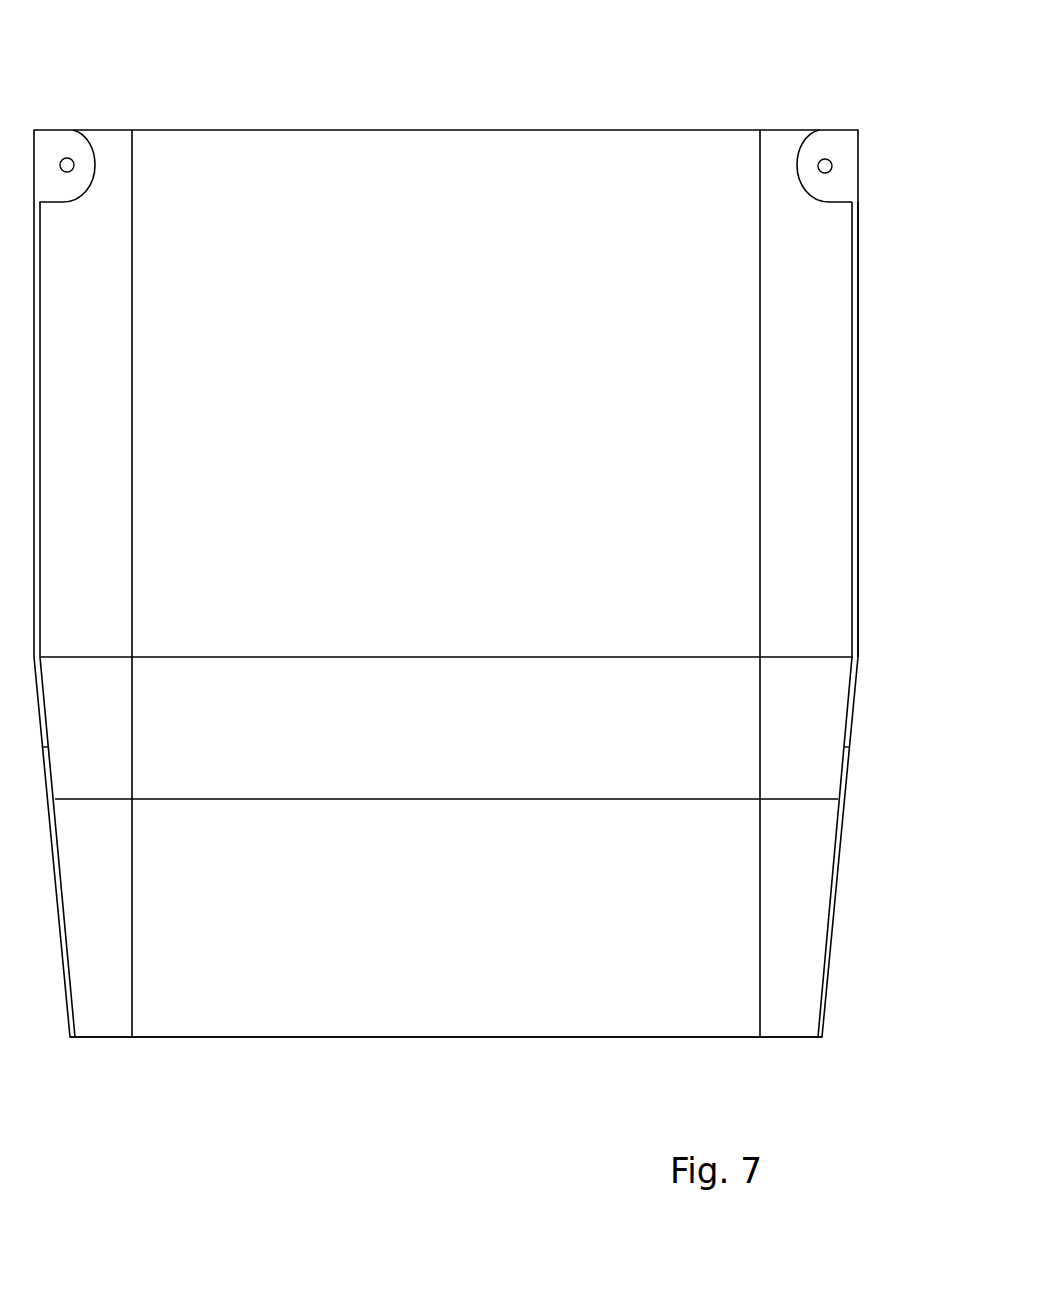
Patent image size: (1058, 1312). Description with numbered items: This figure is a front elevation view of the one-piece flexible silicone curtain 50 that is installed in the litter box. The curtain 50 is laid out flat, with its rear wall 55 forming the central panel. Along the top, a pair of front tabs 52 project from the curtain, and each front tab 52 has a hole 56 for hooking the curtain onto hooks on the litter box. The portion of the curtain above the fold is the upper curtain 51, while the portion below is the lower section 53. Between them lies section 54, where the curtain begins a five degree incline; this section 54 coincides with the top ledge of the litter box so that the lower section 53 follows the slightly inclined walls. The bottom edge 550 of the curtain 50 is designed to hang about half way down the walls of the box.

The curtain 50 is at (420, 86).
The upper curtain 51 is at (856, 548).
The front tabs 52 is at (833, 187).
The lower section 53 is at (843, 847).
The section 54 is at (854, 659).
The rear wall 55 is at (410, 391).
The holes 56 is at (826, 158).
The bottom edge 550 is at (603, 1036).